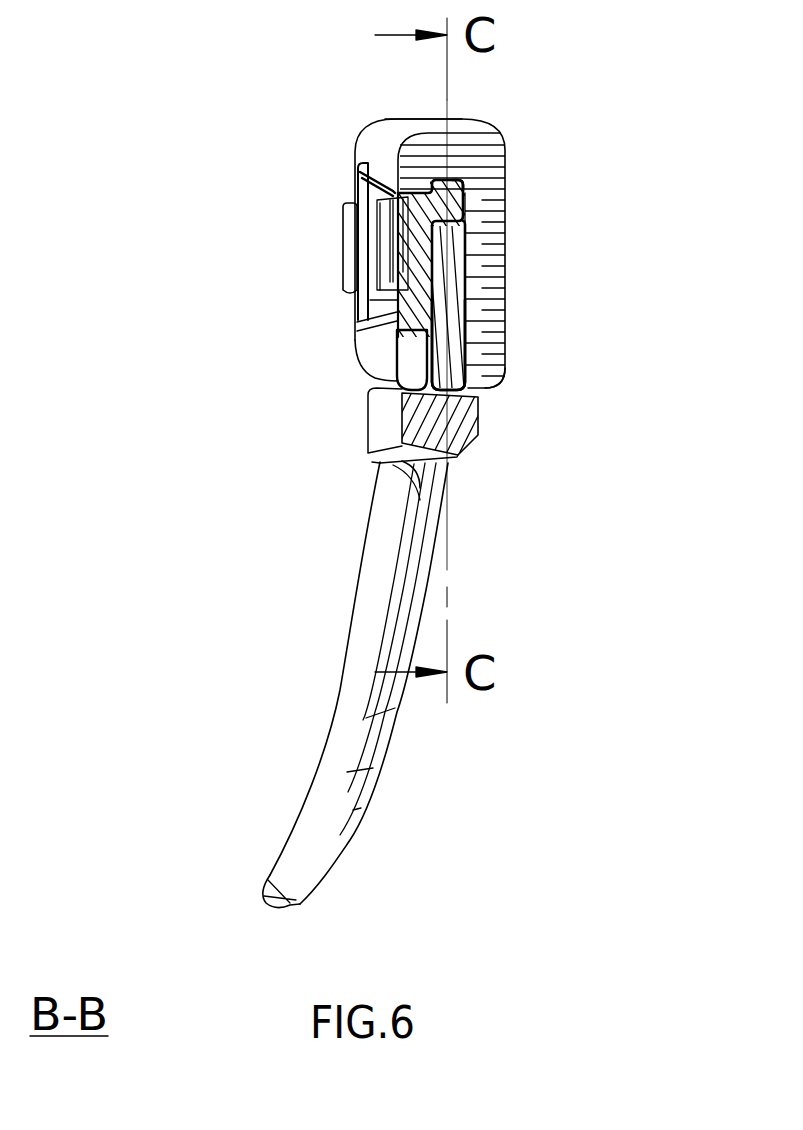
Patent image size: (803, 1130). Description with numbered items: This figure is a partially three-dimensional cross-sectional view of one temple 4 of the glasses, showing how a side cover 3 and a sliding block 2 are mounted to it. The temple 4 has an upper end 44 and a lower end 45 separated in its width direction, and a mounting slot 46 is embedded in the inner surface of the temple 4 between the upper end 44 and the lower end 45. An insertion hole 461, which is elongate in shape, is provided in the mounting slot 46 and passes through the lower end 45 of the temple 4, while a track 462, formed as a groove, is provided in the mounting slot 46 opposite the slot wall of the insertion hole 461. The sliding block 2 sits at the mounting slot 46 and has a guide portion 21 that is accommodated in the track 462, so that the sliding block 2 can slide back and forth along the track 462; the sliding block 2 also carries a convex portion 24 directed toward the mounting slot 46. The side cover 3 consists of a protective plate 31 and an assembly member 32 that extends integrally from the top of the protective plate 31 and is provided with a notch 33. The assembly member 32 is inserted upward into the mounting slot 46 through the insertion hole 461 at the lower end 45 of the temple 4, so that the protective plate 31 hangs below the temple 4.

The sliding block 2 is at (343, 213).
The guide portion 21 is at (468, 168).
The convex portion 24 is at (457, 308).
The side cover 3 is at (340, 693).
The protective plate 31 is at (330, 770).
The assembly member 32 is at (473, 358).
The notch 33 is at (343, 279).
The temple 4 is at (508, 194).
The upper end 44 is at (408, 119).
The lower end 45 is at (412, 488).
The mounting slot 46 is at (463, 240).
The insertion hole 461 is at (493, 385).
The track 462 is at (466, 178).